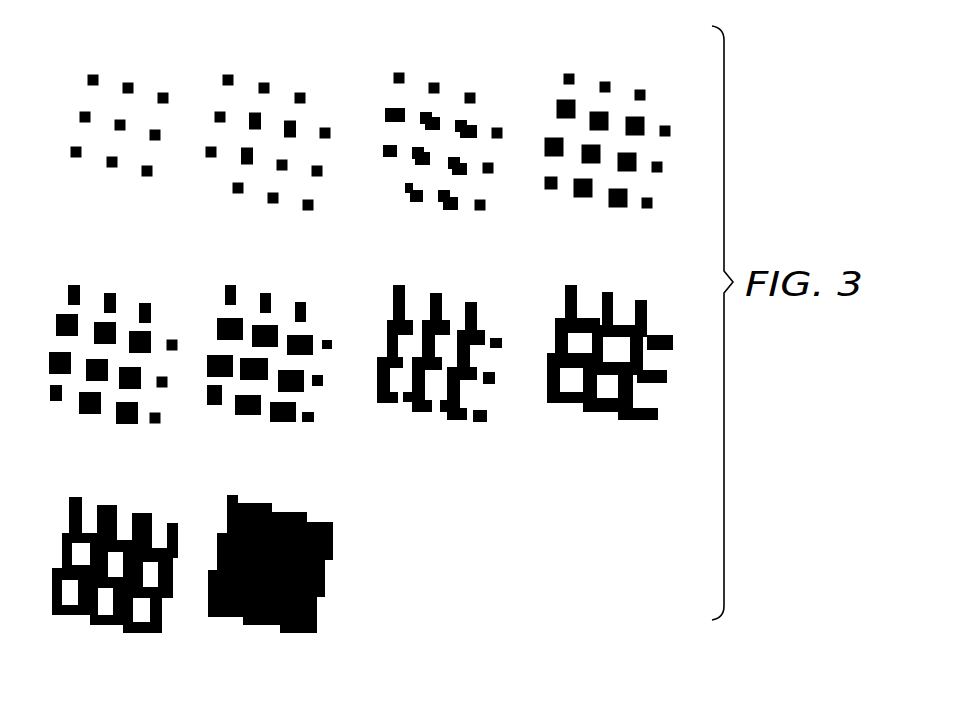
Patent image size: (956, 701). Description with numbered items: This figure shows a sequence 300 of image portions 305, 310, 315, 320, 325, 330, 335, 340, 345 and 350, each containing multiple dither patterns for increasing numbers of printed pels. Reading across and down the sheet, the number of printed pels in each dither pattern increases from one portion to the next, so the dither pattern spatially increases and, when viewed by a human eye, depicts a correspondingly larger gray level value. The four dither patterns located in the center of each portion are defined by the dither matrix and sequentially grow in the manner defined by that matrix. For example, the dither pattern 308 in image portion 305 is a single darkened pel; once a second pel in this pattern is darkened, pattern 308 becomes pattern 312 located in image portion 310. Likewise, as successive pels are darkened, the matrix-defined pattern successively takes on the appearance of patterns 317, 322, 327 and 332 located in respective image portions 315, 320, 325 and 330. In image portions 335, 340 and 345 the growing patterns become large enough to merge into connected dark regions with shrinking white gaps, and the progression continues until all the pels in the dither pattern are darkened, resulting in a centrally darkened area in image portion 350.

The dither pattern sequence 300 is at (466, 525).
The image portion 305 is at (85, 66).
The dither pattern 308 is at (118, 126).
The image portion 310 is at (223, 64).
The dither pattern 312 is at (253, 121).
The image portion 315 is at (393, 65).
The dither pattern 317 is at (422, 125).
The image portion 320 is at (563, 64).
The dither pattern 322 is at (593, 120).
The image portion 325 is at (68, 275).
The dither pattern 327 is at (95, 338).
The image portion 330 is at (223, 275).
The dither pattern 332 is at (248, 342).
The image portion 335 is at (395, 274).
The image portion 340 is at (565, 274).
The image portion 345 is at (68, 484).
The image portion 350 is at (223, 484).